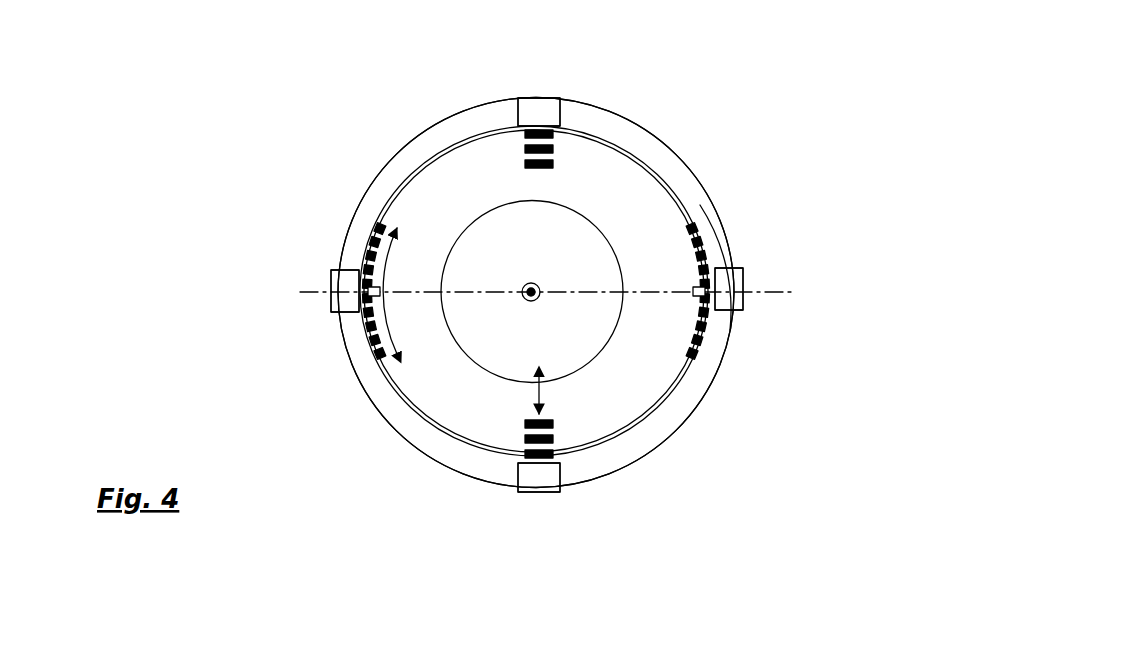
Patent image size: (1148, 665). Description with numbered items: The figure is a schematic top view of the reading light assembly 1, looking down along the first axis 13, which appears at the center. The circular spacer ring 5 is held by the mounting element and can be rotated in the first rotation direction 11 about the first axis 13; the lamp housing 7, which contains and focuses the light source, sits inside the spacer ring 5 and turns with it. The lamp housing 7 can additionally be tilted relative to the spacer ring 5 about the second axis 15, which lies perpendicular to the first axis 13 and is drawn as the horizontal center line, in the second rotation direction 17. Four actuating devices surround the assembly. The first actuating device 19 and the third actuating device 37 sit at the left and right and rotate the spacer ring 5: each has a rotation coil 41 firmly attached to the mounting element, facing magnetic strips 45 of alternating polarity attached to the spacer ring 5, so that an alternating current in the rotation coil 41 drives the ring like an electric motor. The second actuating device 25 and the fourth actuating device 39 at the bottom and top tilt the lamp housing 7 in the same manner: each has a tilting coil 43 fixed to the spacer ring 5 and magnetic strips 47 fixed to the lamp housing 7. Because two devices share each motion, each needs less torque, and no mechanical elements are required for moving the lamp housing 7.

The reading light assembly 1 is at (738, 161).
The spacer ring 5 is at (653, 152).
The lamp housing 7 is at (452, 200).
The first rotation direction 11 is at (392, 208).
The first axis 13 is at (533, 283).
The second axis 15 is at (745, 290).
The second rotation direction 17 is at (538, 388).
The first actuating device 19 is at (309, 303).
The second actuating device 25 is at (573, 461).
The third actuating device 37 is at (723, 341).
The fourth actuating device 39 is at (569, 119).
The rotation coil 41 is at (331, 278).
The tilting coil 43 is at (541, 110).
The magnetic strips 45 is at (707, 243).
The magnetic strips 47 is at (538, 127).